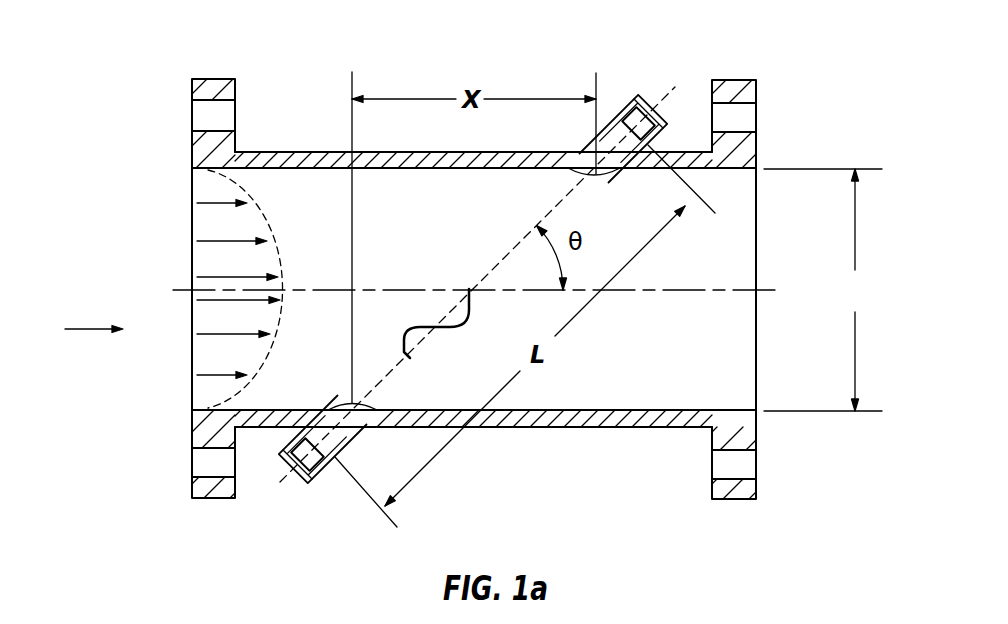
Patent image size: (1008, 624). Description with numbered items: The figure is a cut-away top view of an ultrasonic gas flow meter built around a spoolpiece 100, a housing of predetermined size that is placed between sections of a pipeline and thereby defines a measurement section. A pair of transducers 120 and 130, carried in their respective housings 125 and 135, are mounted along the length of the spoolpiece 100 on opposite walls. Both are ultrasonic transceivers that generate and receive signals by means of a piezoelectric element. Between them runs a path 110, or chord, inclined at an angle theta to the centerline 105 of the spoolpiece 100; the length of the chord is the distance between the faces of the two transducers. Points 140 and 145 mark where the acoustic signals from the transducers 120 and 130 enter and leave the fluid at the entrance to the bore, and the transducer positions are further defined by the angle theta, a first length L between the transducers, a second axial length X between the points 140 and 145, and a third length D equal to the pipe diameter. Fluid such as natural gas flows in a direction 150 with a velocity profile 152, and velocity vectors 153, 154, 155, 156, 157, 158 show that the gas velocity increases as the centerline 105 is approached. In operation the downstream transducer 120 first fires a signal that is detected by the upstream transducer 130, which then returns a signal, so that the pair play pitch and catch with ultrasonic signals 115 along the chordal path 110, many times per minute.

The spoolpiece 100 is at (210, 78).
The centerline 105 is at (757, 292).
The path 110 is at (514, 248).
The ultrasonic signals 115 is at (452, 325).
The downstream transducer 120 is at (592, 110).
The housing 125 is at (626, 112).
The upstream transducer 130 is at (347, 452).
The housing 135 is at (343, 438).
The point 140 is at (597, 172).
The point 145 is at (350, 404).
The flow direction 150 is at (100, 333).
The velocity profile 152 is at (257, 210).
The velocity vector 153 is at (212, 203).
The velocity vector 154 is at (212, 241).
The velocity vector 155 is at (212, 277).
The velocity vector 156 is at (210, 300).
The velocity vector 157 is at (210, 334).
The velocity vector 158 is at (210, 375).